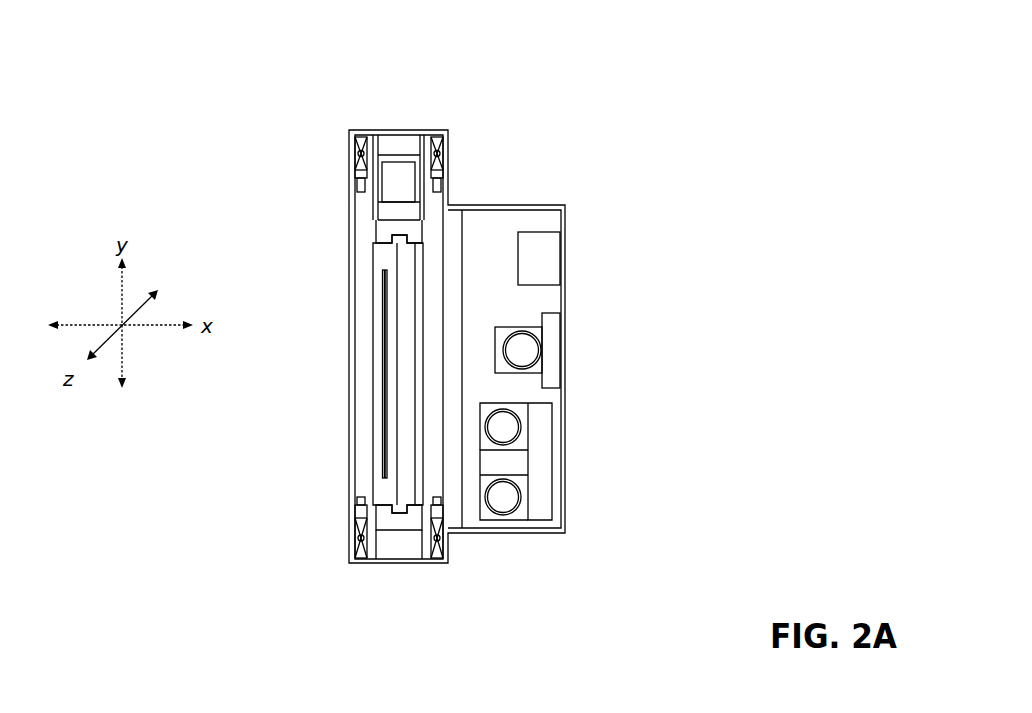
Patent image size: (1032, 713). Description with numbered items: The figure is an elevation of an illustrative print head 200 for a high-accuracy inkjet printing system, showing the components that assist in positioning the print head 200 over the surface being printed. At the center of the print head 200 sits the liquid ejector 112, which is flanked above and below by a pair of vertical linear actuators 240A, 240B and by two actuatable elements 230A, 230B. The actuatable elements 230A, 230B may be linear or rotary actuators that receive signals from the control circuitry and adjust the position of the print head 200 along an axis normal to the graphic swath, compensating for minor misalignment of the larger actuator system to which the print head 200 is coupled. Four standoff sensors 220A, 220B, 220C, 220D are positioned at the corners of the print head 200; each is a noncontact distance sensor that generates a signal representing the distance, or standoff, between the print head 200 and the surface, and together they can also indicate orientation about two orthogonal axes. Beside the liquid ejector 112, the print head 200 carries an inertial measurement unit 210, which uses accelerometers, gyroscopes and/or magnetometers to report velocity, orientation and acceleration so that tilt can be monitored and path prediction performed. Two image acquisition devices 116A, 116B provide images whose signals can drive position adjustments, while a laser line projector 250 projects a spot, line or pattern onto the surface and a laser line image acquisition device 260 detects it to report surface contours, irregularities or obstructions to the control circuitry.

The print head 200 is at (745, 40).
The liquid ejector 112 is at (373, 365).
The image acquisition device 116A is at (503, 428).
The image acquisition device 116B is at (503, 498).
The inertial measurement unit 210 is at (540, 258).
The standoff sensor 220A is at (349, 147).
The standoff sensor 220B is at (448, 142).
The standoff sensor 220C is at (358, 543).
The standoff sensor 220D is at (447, 543).
The actuatable element 230A is at (397, 145).
The actuatable element 230B is at (402, 542).
The vertical linear actuator 240A is at (382, 236).
The vertical linear actuator 240B is at (385, 517).
The laser line projector 250 is at (547, 368).
The laser line image acquisition device 260 is at (520, 350).